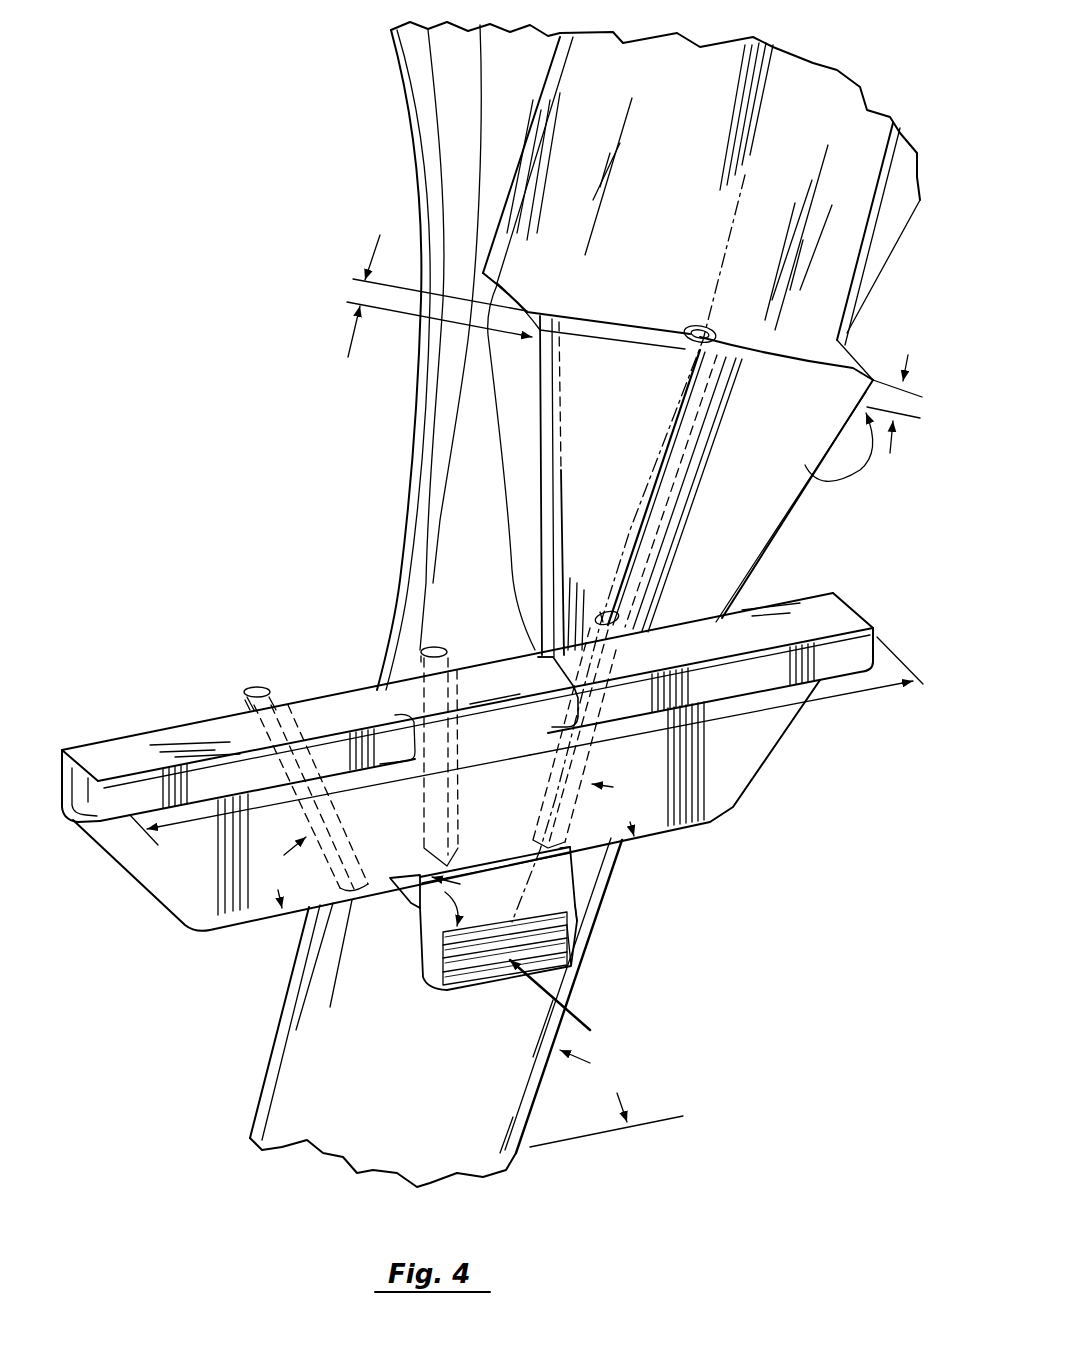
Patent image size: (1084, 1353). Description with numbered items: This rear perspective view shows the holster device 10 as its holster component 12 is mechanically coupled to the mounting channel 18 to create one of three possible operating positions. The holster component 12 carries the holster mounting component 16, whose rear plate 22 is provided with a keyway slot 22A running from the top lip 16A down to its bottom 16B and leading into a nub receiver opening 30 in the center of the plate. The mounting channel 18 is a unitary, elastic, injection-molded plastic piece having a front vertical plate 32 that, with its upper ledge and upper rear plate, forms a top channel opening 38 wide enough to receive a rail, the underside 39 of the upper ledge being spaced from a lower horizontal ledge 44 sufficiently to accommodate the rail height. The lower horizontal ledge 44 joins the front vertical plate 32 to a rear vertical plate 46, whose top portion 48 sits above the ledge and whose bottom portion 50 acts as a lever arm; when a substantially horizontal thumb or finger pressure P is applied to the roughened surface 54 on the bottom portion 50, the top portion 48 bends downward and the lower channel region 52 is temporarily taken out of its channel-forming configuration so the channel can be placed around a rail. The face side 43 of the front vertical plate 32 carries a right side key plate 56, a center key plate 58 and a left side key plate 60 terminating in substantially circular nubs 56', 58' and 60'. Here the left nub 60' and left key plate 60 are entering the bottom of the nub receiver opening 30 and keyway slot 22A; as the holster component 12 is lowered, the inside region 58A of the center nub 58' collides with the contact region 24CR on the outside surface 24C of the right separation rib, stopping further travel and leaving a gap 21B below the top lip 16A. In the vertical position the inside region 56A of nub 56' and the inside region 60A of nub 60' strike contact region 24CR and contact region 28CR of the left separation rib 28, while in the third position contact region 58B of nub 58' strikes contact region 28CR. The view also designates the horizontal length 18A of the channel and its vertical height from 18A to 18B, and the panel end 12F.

The holster device 10 is at (297, 302).
The holster component 12 is at (463, 120).
The panel end portion 12F is at (780, 210).
The holster mounting component 16 is at (627, 380).
The top lip of the rear plate 16A is at (553, 312).
The bottom of the rear plate 16B is at (600, 702).
The mounting channel 18 is at (484, 732).
The top surface / horizontal length of the mounting channel 18A is at (832, 596).
The bottom of the mounting channel 18B is at (663, 835).
The gap 21B is at (352, 294).
The rear plate 22 is at (765, 483).
The keyway slot 22A is at (697, 397).
The outside surface of the right separation rib 24C is at (520, 415).
The contact region of the right separation rib 24CR is at (530, 339).
The left separation rib 28 is at (852, 368).
The contact region of the left separation rib 28CR is at (804, 447).
The nub receiver opening 30 is at (690, 330).
The front vertical plate 32 is at (780, 714).
The top channel opening 38 is at (87, 790).
The underside of the upper horizontal ledge 39 is at (548, 682).
The face side of the vertical plate 43 is at (493, 698).
The lower horizontal ledge 44 is at (513, 948).
The rear vertical plate 46 is at (567, 910).
The top portion of the rear vertical plate 48 is at (563, 870).
The bottom portion of the rear vertical plate 50 is at (570, 923).
The lower channel region 52 is at (403, 883).
The roughened surface 54 is at (482, 958).
The right side key plate 56 is at (300, 709).
The right key plate nub 56' is at (211, 663).
The inside region of the right nub 56A is at (248, 682).
The center key plate 58 is at (379, 692).
The center key plate nub 58' is at (360, 618).
The inside region of the center nub 58A is at (428, 652).
The contact region of the center nub 58B is at (412, 652).
The left side key plate 60 is at (596, 548).
The left key plate nub 60' is at (595, 568).
The inside region of the left nub 60A is at (594, 602).
The thumb/finger pressure P is at (573, 1018).